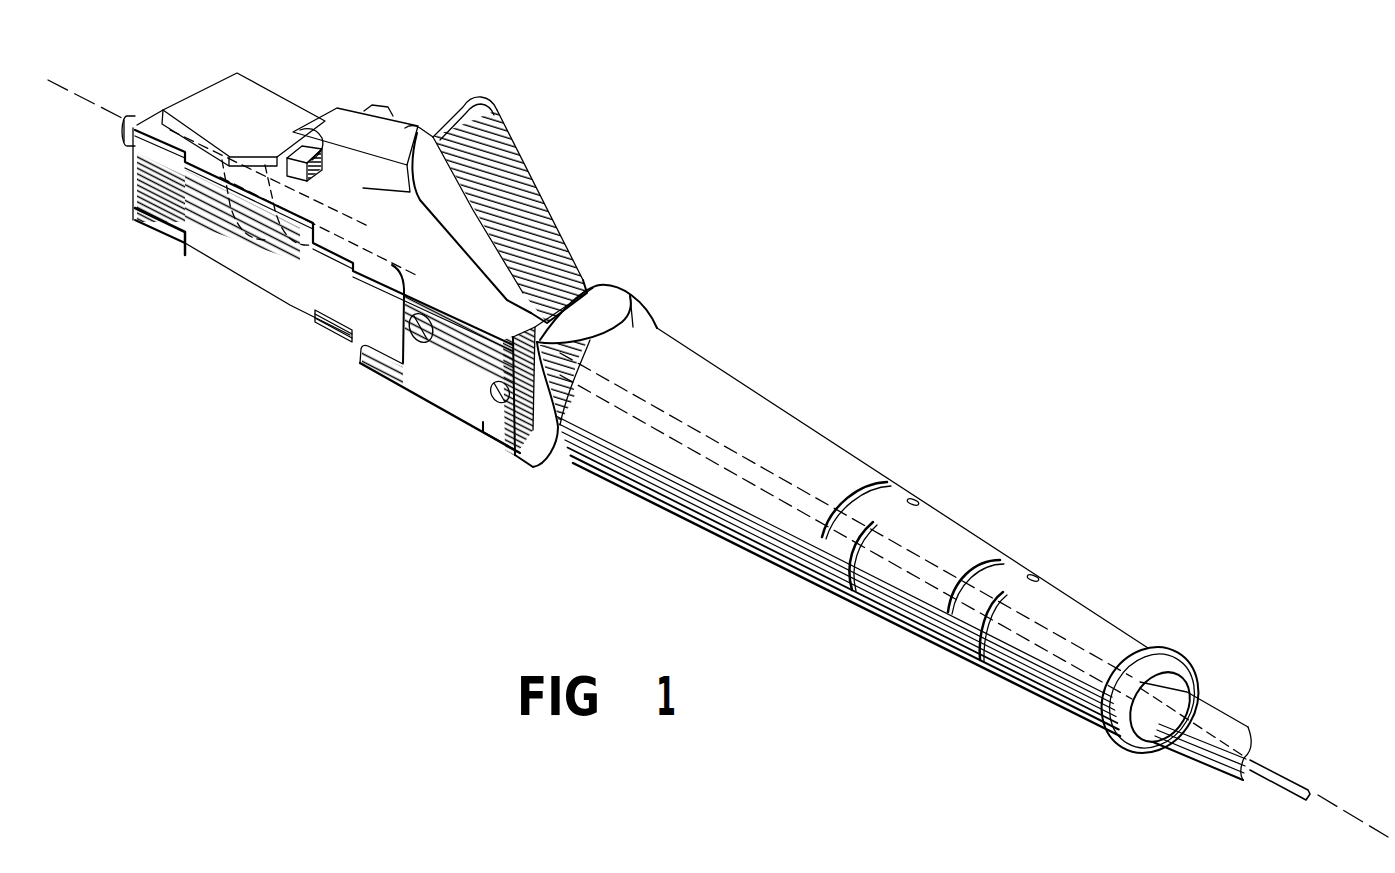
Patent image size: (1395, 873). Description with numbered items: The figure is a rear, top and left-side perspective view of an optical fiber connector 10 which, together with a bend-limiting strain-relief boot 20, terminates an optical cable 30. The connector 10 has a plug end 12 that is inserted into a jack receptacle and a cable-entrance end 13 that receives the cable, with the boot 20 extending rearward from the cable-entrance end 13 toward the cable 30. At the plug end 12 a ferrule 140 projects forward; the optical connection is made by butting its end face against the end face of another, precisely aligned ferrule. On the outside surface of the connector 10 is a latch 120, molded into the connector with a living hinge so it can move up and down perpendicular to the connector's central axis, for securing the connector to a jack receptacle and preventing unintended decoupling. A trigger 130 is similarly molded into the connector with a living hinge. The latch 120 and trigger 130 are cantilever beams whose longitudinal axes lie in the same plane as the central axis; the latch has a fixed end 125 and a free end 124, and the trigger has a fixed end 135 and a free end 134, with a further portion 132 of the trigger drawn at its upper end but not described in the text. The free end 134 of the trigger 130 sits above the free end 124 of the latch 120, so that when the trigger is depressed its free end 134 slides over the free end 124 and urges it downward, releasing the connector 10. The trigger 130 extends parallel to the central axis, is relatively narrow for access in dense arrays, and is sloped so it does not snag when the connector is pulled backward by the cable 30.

The optical fiber connector 10 is at (243, 436).
The plug end 12 is at (124, 214).
The cable-entrance end 13 is at (523, 462).
The bend-limiting strain-relief boot 20 is at (790, 417).
The optical cable 30 is at (1222, 708).
The latch 120 is at (340, 112).
The free end of latch 124 is at (410, 130).
The fixed end of latch 125 is at (268, 95).
The trigger 130 is at (536, 196).
The hook end of actuator arm 132 is at (485, 105).
The free end of trigger 134 is at (510, 163).
The fixed end of trigger 135 is at (568, 265).
The ferrule 140 is at (140, 112).